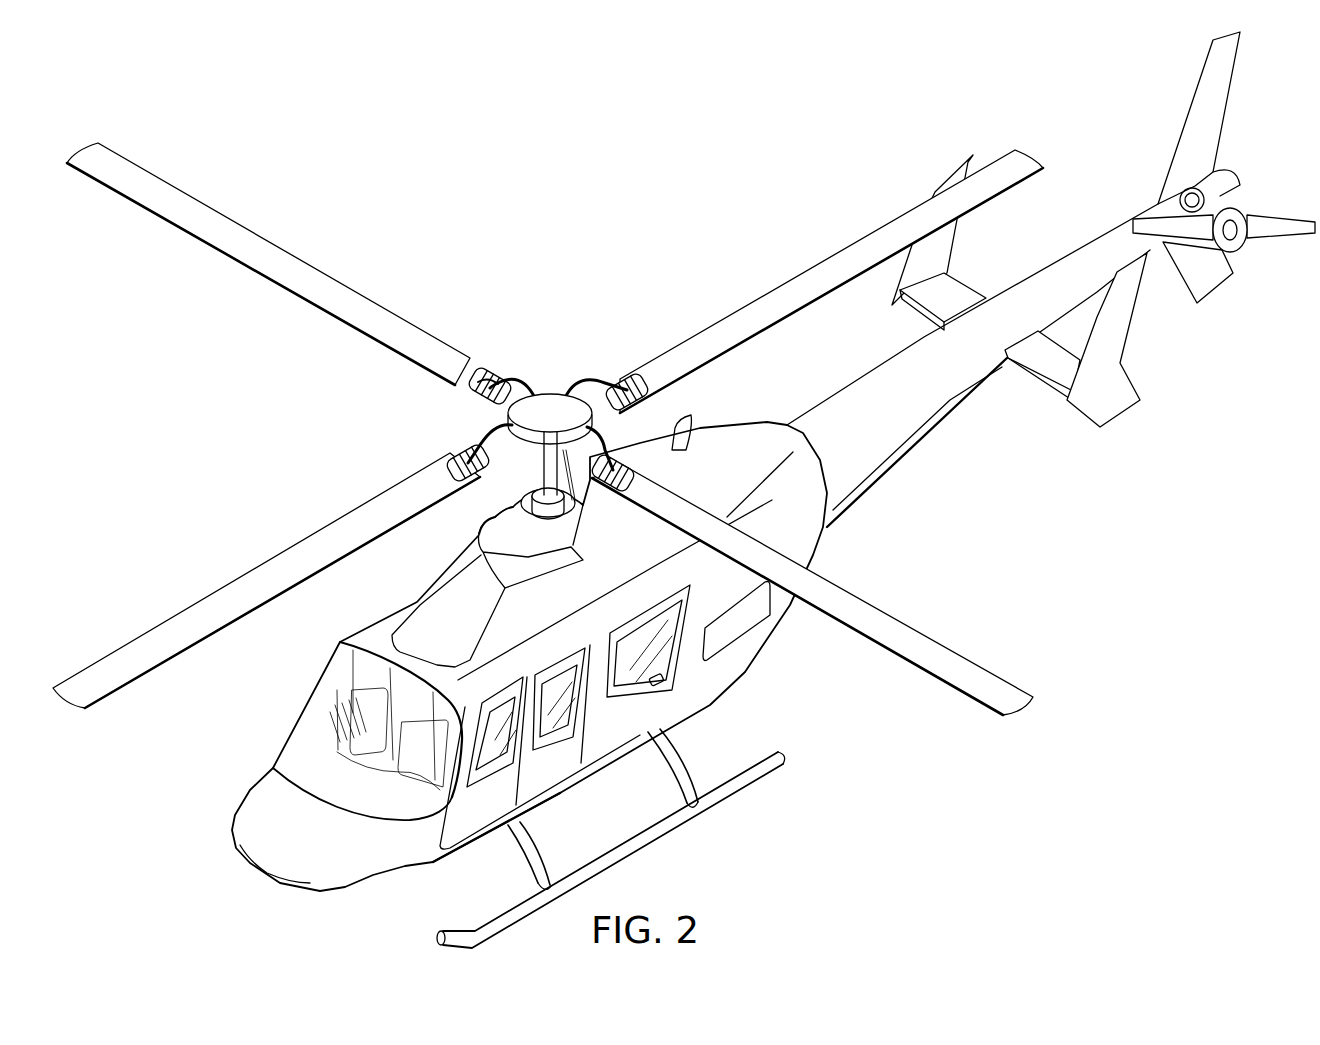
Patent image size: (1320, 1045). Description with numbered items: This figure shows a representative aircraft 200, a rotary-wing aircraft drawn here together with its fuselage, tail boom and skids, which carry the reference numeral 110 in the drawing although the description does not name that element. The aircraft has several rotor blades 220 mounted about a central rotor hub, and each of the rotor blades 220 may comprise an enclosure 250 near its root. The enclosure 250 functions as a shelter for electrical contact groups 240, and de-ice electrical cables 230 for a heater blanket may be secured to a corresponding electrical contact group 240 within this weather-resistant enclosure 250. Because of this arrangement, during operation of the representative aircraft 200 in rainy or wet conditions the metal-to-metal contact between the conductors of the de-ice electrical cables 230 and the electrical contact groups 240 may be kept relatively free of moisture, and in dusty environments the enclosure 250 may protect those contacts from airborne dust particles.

The rotorcraft fuselage 110 is at (950, 427).
The representative aircraft 200 is at (323, 100).
The rotor blades 220 is at (203, 203).
The de-ice electrical cables 230 is at (558, 397).
The electrical contact groups 240 is at (500, 385).
The enclosure 250 is at (453, 378).